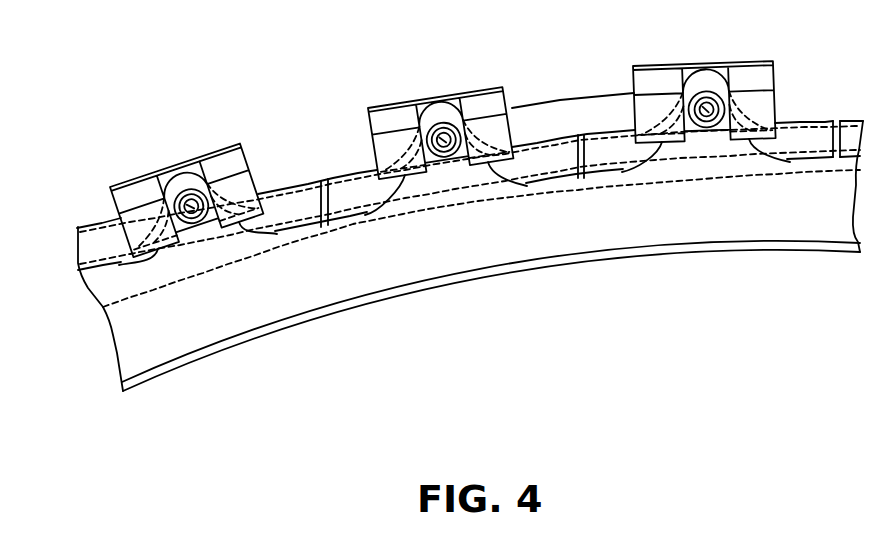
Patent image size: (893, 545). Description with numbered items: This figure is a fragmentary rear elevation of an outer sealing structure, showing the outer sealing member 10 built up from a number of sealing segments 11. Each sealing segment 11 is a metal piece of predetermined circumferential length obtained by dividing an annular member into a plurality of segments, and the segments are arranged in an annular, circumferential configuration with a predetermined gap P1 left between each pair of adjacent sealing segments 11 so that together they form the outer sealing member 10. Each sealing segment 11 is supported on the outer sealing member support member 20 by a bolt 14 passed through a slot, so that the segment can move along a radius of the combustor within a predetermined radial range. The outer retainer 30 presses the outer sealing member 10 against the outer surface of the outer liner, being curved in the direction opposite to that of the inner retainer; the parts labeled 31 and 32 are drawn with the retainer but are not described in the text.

The outer sealing member 10 is at (265, 153).
The sealing segment 11 is at (300, 183).
The bolt 14 is at (190, 205).
The outer sealing member support member 20 is at (523, 250).
The outer retainer 30 is at (571, 94).
The clamp upper part 31 is at (392, 107).
The clamp 32 is at (130, 181).
The gap P1 is at (328, 227).